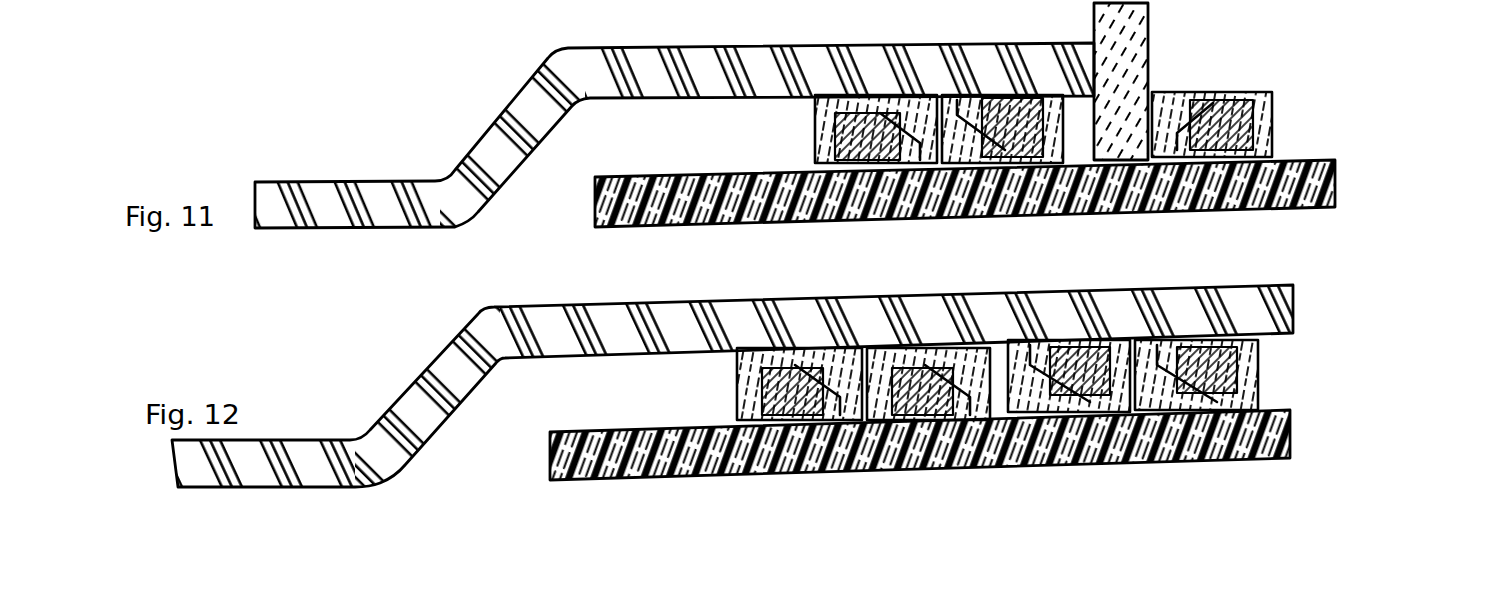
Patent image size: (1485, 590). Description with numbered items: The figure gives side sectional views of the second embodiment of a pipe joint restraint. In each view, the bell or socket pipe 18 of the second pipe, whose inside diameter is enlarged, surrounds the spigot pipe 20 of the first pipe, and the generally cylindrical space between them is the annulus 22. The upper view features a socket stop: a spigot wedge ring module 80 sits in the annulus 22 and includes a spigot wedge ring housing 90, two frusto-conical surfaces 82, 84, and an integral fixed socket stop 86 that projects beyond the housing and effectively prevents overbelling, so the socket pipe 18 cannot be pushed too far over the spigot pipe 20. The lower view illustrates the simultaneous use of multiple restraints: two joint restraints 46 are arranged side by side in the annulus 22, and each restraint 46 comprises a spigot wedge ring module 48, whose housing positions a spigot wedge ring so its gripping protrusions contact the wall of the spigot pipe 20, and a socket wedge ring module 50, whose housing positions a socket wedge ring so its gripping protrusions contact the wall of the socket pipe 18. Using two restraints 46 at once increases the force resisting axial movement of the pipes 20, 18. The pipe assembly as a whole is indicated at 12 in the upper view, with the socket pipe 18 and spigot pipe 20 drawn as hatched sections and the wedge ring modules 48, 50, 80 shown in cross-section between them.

In FIG. 11, the flexible circuit assembly 12 is at (652, 120).
In FIG. 11, the socket pipe 18 is at (656, 76).
In FIG. 12, the socket pipe 18 is at (620, 325).
In FIG. 11, the spigot pipe 20 is at (645, 208).
In FIG. 12, the spigot pipe 20 is at (618, 470).
In FIG. 11, the annulus 22 is at (615, 133).
In FIG. 12, the annulus 22 is at (568, 390).
In FIG. 12, the joint restraint 46 is at (1368, 376).
In FIG. 12, the spigot wedge ring module 48 is at (880, 407).
In FIG. 12, the socket wedge ring module 50 is at (1140, 408).
In FIG. 11, the spigot wedge ring module 80 is at (1331, 124).
In FIG. 11, the frusto-conical surface 82 is at (1183, 140).
In FIG. 11, the frusto-conical surface 84 is at (1185, 125).
In FIG. 11, the socket stop 86 is at (1149, 16).
In FIG. 11, the spigot wedge ring housing 90 is at (1267, 118).